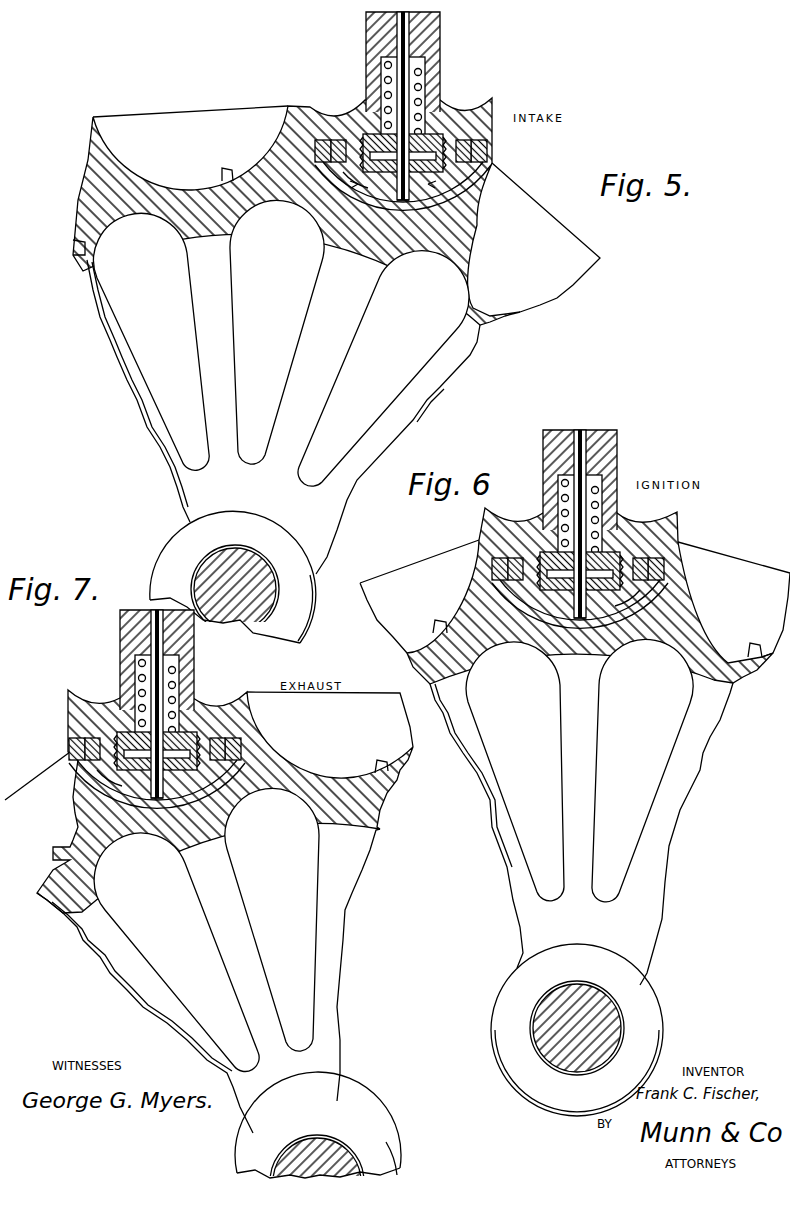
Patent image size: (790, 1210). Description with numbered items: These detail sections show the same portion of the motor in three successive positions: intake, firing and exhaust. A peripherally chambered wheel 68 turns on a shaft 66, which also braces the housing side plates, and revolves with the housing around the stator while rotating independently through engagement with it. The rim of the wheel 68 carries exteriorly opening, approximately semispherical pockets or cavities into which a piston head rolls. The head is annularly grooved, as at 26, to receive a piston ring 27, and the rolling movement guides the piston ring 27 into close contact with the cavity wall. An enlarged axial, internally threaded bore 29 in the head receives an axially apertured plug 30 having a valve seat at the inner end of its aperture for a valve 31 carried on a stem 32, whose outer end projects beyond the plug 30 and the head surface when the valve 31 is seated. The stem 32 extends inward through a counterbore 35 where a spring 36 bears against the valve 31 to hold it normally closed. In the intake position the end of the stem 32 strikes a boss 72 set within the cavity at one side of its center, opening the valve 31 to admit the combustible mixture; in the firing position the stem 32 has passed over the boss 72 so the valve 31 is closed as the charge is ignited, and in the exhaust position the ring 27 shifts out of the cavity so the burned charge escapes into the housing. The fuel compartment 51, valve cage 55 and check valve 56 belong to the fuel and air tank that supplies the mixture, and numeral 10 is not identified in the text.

In FIG. 5, the rotor cylinder chamber 10 is at (193, 80).
In FIG. 6, the rotor cylinder chamber 10 is at (389, 582).
In FIG. 7, the rotor cylinder chamber 10 is at (380, 705).
In FIG. 5, the annular groove 26 is at (322, 163).
In FIG. 7, the annular groove 26 is at (72, 742).
In FIG. 5, the piston ring 27 is at (320, 150).
In FIG. 6, the piston ring 27 is at (479, 542).
In FIG. 7, the piston ring 27 is at (73, 736).
In FIG. 5, the internally threaded bore 29 is at (368, 150).
In FIG. 6, the internally threaded bore 29 is at (560, 555).
In FIG. 7, the internally threaded bore 29 is at (100, 752).
In FIG. 5, the plug 30 is at (478, 200).
In FIG. 6, the plug 30 is at (557, 597).
In FIG. 7, the plug 30 is at (148, 790).
In FIG. 6, the valve 31 is at (588, 605).
In FIG. 5, the valve stem 32 is at (398, 52).
In FIG. 6, the valve stem 32 is at (588, 458).
In FIG. 7, the valve stem 32 is at (163, 639).
In FIG. 6, the counterbore 35 is at (597, 483).
In FIG. 7, the counterbore 35 is at (174, 665).
In FIG. 7, the spring 36 is at (166, 688).
In FIG. 5, the fuel compartment 51 is at (338, 190).
In FIG. 7, the fuel compartment 51 is at (101, 770).
In FIG. 5, the valve cage 55 is at (420, 80).
In FIG. 5, the valve 56 is at (428, 98).
In FIG. 6, the valve 56 is at (597, 505).
In FIG. 5, the shaft 66 is at (258, 595).
In FIG. 6, the shaft 66 is at (618, 1003).
In FIG. 7, the shaft 66 is at (333, 1143).
In FIG. 5, the peripherally chambered wheel 68 is at (327, 283).
In FIG. 6, the peripherally chambered wheel 68 is at (570, 778).
In FIG. 7, the peripherally chambered wheel 68 is at (345, 846).
In FIG. 5, the boss 72 is at (233, 161).
In FIG. 6, the boss 72 is at (441, 622).
In FIG. 7, the boss 72 is at (383, 763).